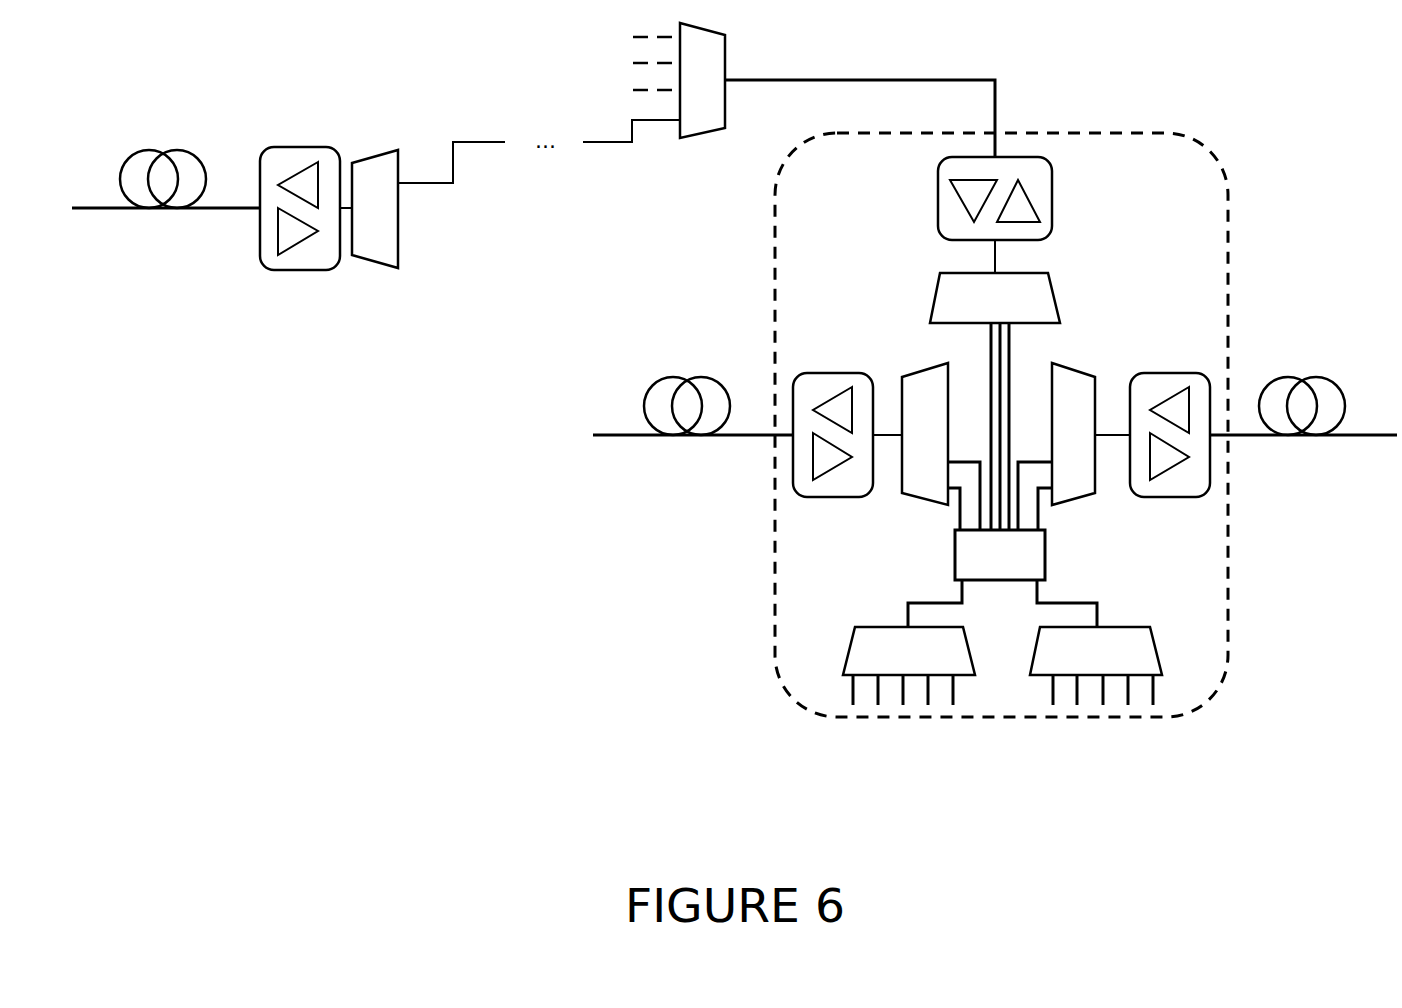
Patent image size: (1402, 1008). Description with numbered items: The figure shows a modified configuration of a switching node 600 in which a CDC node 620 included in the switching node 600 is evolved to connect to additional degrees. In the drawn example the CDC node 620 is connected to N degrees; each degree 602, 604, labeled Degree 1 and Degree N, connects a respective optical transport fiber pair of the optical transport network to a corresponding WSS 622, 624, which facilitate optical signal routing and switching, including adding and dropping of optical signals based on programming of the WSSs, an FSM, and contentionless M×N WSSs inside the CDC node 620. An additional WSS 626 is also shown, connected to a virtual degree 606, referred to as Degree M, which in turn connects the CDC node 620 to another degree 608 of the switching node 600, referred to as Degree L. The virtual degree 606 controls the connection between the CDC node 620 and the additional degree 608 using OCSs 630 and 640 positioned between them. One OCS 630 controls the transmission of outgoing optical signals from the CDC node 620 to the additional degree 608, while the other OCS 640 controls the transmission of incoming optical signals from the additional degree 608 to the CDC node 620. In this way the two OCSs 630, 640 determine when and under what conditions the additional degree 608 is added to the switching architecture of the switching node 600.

The switching node 600 is at (751, 824).
The degree 602 is at (638, 438).
The degree 604 is at (1337, 438).
The virtual degree 606 is at (843, 80).
The additional degree 608 is at (113, 210).
The CDC node 620 is at (1001, 425).
The WSS 622 is at (928, 373).
The WSS 624 is at (1075, 490).
The additional WSS 626 is at (937, 290).
The OCS 630 is at (375, 253).
The OCS 640 is at (687, 140).